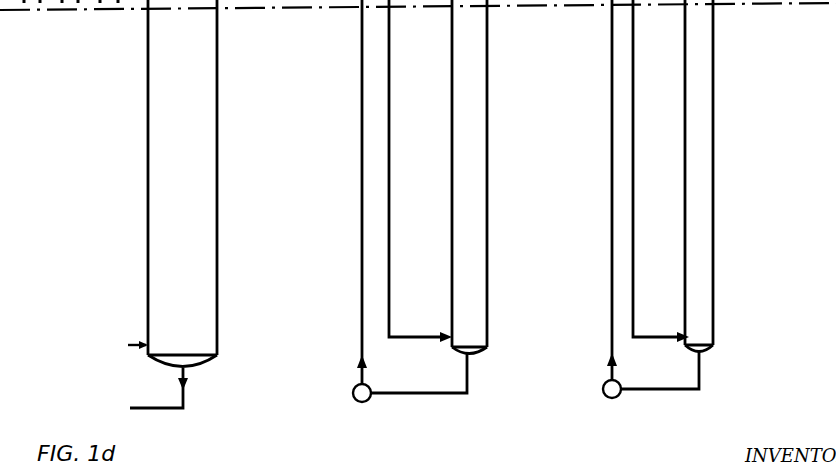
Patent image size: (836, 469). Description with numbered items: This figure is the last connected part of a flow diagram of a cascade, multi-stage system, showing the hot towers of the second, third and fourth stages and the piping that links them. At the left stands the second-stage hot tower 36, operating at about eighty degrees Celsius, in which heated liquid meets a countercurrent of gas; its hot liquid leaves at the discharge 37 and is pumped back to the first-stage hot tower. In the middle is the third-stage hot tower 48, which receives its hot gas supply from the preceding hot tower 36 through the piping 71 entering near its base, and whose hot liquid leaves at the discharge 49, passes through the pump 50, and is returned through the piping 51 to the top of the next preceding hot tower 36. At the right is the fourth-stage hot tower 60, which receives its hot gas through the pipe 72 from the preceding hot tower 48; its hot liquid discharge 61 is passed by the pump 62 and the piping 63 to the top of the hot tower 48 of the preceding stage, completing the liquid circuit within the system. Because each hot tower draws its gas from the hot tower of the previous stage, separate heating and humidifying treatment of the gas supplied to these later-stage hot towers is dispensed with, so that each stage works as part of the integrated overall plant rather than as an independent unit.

The hot tower 36 is at (218, 12).
The hot liquid discharge 37 is at (193, 369).
The hot tower 48 is at (487, 156).
The discharge 49 is at (472, 358).
The pump 50 is at (360, 402).
The piping 51 is at (362, 88).
The hot tower 60 is at (694, 101).
The hot liquid discharge 61 is at (703, 354).
The pump 62 is at (606, 396).
The piping 63 is at (612, 75).
The piping 71 is at (390, 88).
The pipe 72 is at (634, 33).